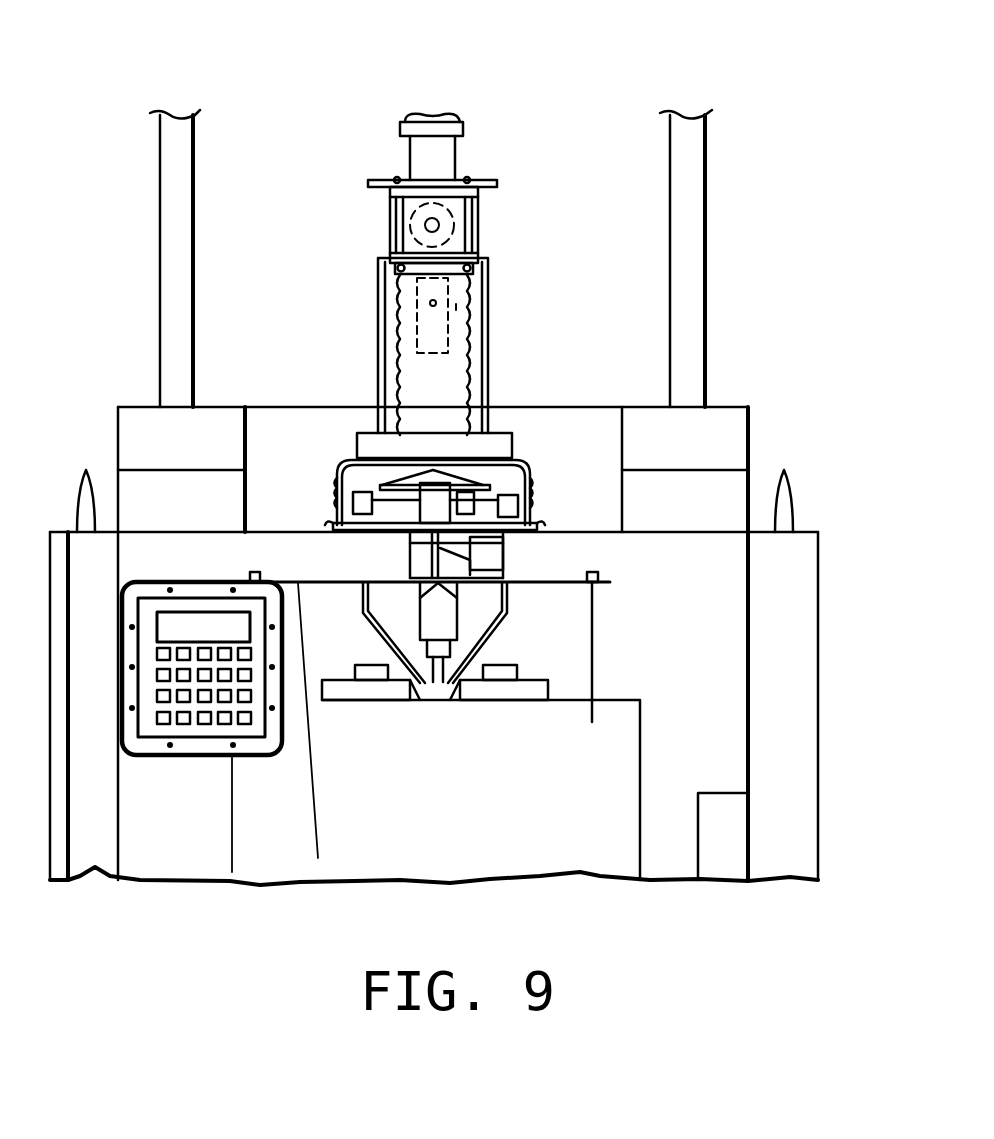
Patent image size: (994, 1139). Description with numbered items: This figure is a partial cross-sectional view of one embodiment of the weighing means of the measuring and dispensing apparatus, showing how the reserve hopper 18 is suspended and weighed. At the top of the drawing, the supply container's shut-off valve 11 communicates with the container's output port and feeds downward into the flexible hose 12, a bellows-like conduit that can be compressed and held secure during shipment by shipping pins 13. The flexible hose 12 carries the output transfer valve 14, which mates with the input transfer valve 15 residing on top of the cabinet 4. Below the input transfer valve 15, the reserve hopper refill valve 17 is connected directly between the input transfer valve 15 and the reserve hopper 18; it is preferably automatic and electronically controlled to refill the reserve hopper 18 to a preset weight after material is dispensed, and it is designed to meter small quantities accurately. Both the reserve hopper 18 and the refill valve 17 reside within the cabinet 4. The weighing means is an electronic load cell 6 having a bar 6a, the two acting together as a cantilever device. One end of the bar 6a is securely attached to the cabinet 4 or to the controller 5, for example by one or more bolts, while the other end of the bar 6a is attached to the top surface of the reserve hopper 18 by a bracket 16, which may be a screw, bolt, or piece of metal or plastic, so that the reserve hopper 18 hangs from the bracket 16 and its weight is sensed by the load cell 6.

The cabinet 4 is at (118, 697).
The controller 5 is at (188, 760).
The electronic load cell 6 is at (298, 558).
The bar 6a is at (318, 858).
The shut-off valve 11 is at (438, 243).
The flexible hose 12 is at (422, 370).
The shipping pins 13 is at (490, 315).
The output transfer valve 14 is at (500, 436).
The input transfer valve 15 is at (515, 533).
The bracket 16 is at (593, 600).
The reserve hopper refill valve 17 is at (508, 630).
The reserve hopper 18 is at (565, 842).